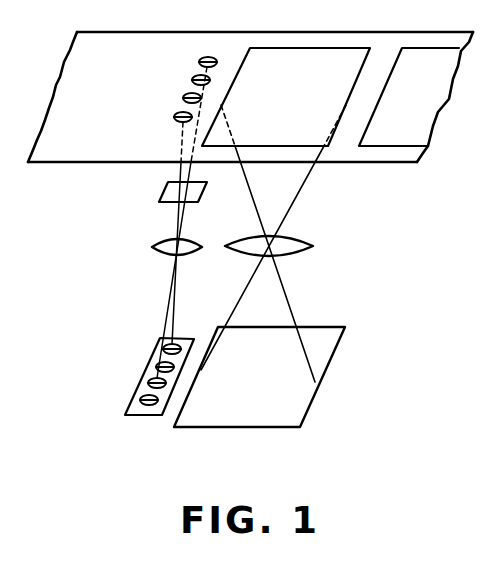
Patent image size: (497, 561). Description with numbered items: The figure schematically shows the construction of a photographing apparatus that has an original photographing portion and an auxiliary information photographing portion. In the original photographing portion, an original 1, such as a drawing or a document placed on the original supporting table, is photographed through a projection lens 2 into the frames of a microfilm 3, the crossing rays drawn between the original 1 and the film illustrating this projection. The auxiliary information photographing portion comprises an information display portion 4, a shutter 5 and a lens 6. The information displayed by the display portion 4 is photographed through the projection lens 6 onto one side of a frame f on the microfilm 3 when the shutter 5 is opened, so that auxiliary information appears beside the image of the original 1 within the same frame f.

The original 1 is at (273, 428).
The projection lens 2 is at (312, 246).
The microfilm 3 is at (250, 101).
The information display portion 4 is at (143, 378).
The shutter 5 is at (165, 189).
The lens 6 is at (155, 244).
The frame f is at (300, 47).